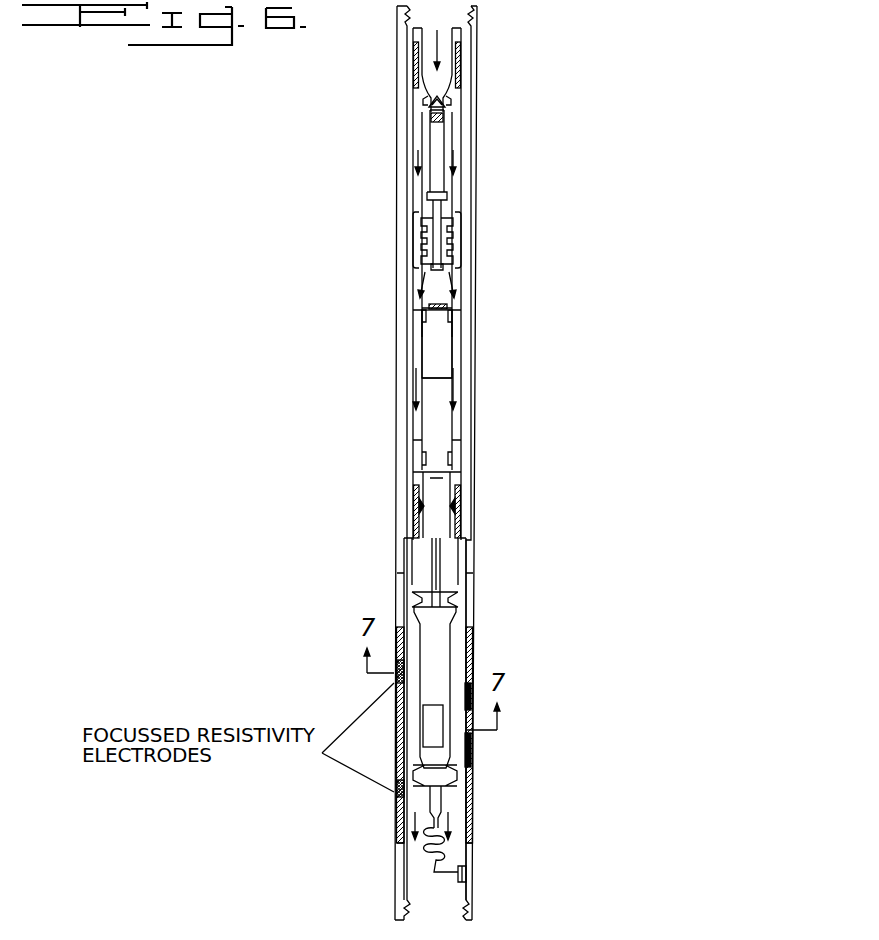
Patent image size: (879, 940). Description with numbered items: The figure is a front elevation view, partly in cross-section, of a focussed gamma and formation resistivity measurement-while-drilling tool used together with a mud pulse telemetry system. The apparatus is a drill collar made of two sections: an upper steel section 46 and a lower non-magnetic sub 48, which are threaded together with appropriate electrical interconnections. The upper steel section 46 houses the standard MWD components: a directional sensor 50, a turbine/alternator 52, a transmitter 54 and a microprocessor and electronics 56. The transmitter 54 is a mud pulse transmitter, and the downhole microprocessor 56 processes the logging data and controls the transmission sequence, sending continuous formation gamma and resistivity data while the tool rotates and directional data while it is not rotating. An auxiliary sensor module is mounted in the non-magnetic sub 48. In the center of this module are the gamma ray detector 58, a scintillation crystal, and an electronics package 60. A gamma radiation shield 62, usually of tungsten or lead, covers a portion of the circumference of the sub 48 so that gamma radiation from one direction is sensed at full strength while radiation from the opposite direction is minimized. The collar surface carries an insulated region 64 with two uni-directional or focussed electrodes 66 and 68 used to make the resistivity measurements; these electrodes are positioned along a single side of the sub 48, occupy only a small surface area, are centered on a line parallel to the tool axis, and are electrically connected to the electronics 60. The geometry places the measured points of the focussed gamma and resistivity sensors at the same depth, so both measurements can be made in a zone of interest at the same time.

The upper steel section 46 is at (465, 352).
The transmitter 54 is at (435, 135).
The turbine/alternator 52 is at (435, 177).
The microprocessor and electronics 56 is at (439, 342).
The directional sensor 50 is at (438, 423).
The non-magnetic sub 48 is at (465, 600).
The electronics package 60 is at (435, 623).
The insulated region 64 is at (470, 648).
The gamma ray detector 58 is at (435, 737).
The focussed electrode 66 is at (394, 665).
The focussed electrode 68 is at (394, 792).
The gamma radiation shield 62 is at (471, 746).